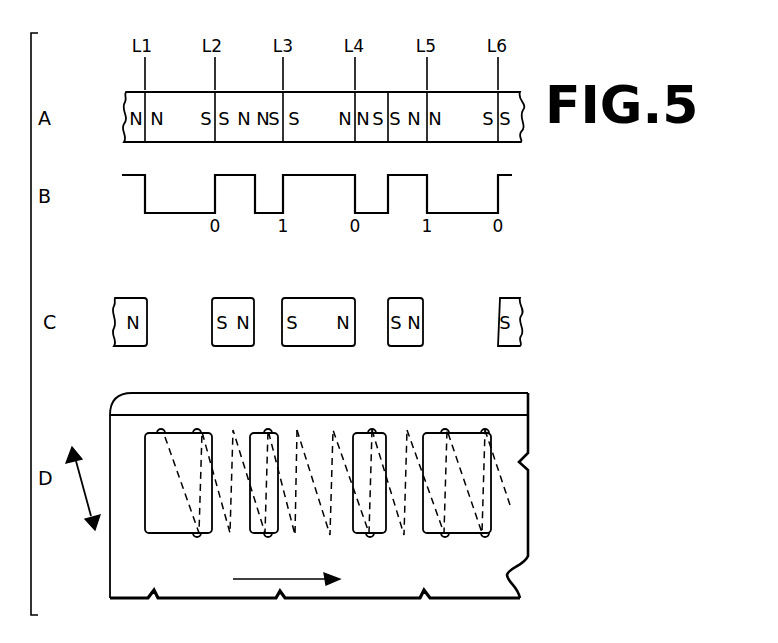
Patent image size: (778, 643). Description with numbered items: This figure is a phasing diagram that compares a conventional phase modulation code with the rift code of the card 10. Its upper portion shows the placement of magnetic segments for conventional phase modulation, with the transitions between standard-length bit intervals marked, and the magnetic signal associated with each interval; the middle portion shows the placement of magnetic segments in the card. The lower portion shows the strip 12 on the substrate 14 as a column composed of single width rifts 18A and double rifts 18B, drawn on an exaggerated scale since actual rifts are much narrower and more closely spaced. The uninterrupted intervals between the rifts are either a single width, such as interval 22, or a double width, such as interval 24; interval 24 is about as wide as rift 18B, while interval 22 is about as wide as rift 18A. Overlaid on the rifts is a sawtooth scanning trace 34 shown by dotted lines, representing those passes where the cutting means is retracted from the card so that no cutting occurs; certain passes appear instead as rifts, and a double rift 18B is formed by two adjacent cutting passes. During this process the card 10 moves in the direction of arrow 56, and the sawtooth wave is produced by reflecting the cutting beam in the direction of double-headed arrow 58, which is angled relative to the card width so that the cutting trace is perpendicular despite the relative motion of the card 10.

The card 10 is at (526, 581).
The magnetic strip 12 is at (110, 575).
The substrate 14 is at (513, 392).
The single width rift 18A is at (280, 533).
The double rift 18B is at (183, 434).
The interval 22 is at (410, 520).
The interval 24 is at (320, 433).
The sawtooth scanning trace 34 is at (418, 432).
The arrow 56 is at (253, 580).
The double-headed arrow 58 is at (86, 496).